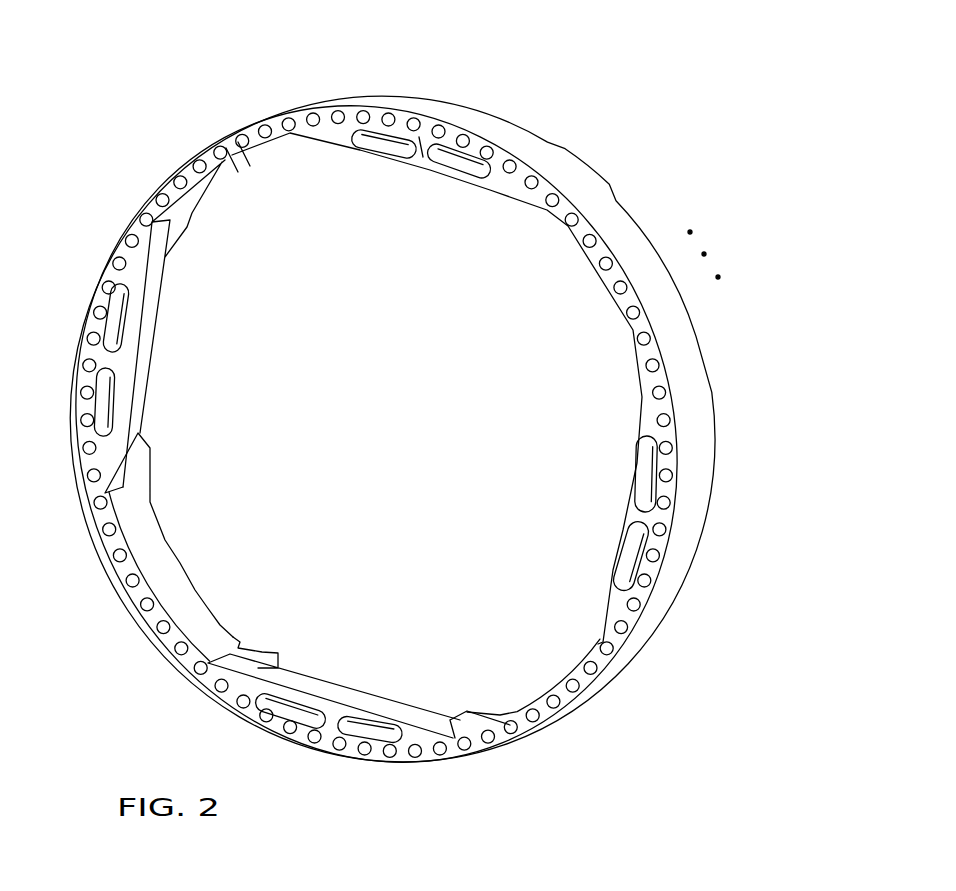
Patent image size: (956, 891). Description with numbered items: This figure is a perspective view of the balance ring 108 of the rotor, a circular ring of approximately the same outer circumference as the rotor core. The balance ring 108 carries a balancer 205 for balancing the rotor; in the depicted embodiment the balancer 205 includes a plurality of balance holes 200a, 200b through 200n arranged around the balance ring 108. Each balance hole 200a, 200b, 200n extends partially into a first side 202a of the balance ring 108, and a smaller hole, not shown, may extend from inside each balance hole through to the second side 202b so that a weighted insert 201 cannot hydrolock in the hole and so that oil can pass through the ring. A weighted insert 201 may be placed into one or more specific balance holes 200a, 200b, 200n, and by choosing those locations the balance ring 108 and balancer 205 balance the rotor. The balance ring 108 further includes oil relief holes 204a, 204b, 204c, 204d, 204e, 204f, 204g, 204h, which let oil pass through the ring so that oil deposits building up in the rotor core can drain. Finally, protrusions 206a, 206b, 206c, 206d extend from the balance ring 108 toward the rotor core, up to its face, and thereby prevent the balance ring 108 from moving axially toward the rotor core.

The balance ring 108 is at (572, 109).
The weighted insert 201 is at (248, 191).
The balance hole 200a is at (578, 222).
The balance hole 200b is at (594, 243).
The balance hole 200n is at (649, 340).
The first side 202a is at (603, 291).
The second side 202b is at (697, 443).
The oil relief hole 204a is at (378, 147).
The oil relief hole 204b is at (467, 180).
The oil relief hole 204c is at (636, 468).
The oil relief hole 204d is at (630, 540).
The oil relief hole 204e is at (366, 720).
The oil relief hole 204f is at (287, 698).
The oil relief hole 204g is at (112, 397).
The oil relief hole 204h is at (125, 320).
The balancer 205 is at (424, 170).
The protrusion 206a is at (500, 694).
The protrusion 206b is at (262, 650).
The protrusion 206c is at (158, 478).
The protrusion 206d is at (190, 232).